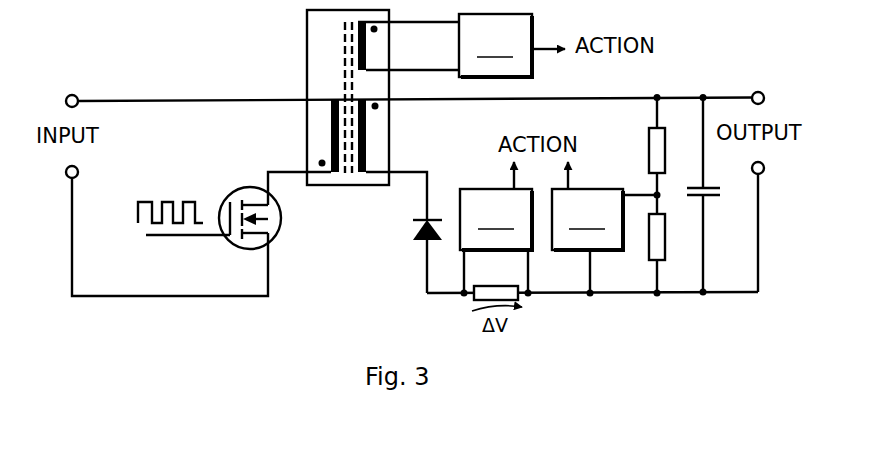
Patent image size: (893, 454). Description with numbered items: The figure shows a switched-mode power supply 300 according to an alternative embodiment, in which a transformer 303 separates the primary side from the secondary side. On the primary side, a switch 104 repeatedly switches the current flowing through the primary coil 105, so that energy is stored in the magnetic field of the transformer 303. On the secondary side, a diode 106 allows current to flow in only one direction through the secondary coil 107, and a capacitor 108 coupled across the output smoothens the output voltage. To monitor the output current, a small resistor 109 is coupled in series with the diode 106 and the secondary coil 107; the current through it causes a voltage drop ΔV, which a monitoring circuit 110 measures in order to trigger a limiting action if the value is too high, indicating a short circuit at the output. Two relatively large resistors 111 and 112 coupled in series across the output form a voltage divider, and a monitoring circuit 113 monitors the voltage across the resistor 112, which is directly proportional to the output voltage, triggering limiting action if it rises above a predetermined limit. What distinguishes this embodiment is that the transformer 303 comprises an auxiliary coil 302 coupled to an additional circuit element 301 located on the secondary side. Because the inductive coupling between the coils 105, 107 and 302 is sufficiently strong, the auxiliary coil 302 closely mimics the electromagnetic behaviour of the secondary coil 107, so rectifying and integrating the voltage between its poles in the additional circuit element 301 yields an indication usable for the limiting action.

The switch 104 is at (281, 231).
The primary coil 105 is at (330, 143).
The diode 106 is at (411, 236).
The secondary coil 107 is at (366, 143).
The capacitor 108 is at (706, 197).
The resistor 109 is at (517, 290).
The monitoring circuit 110 is at (496, 219).
The resistor 111 is at (649, 146).
The resistor 112 is at (660, 240).
The monitoring circuit 113 is at (587, 219).
The switched-mode power supply 300 is at (122, 353).
The additional circuit element 301 is at (512, 45).
The auxiliary coil 302 is at (366, 50).
The transformer 303 is at (348, 185).